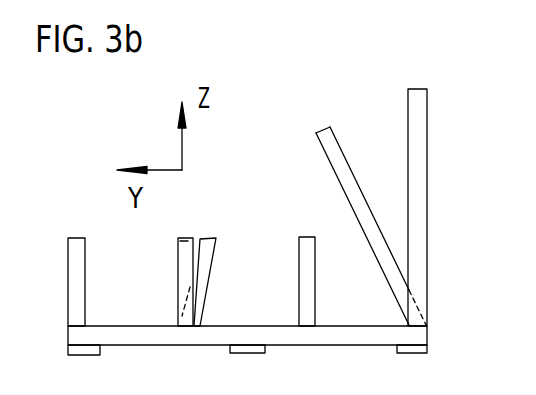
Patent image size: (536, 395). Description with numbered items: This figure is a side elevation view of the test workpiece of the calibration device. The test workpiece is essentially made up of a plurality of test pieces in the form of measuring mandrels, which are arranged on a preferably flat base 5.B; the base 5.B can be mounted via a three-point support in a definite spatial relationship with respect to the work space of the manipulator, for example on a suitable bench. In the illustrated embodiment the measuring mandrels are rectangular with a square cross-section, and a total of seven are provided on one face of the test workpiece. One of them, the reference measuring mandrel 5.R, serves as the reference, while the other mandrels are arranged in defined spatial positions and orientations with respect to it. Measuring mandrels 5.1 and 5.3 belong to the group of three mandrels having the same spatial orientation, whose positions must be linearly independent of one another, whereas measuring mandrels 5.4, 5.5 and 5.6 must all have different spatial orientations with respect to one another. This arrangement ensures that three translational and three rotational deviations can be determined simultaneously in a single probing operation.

The measuring mandrel 5.1 is at (80, 296).
The measuring mandrel 5.3 is at (415, 172).
The measuring mandrel 5.4 is at (178, 240).
The measuring mandrel 5.5 is at (205, 260).
The measuring mandrel 5.6 is at (365, 182).
The reference measuring mandrel 5.R is at (310, 248).
The base 5.B is at (410, 337).